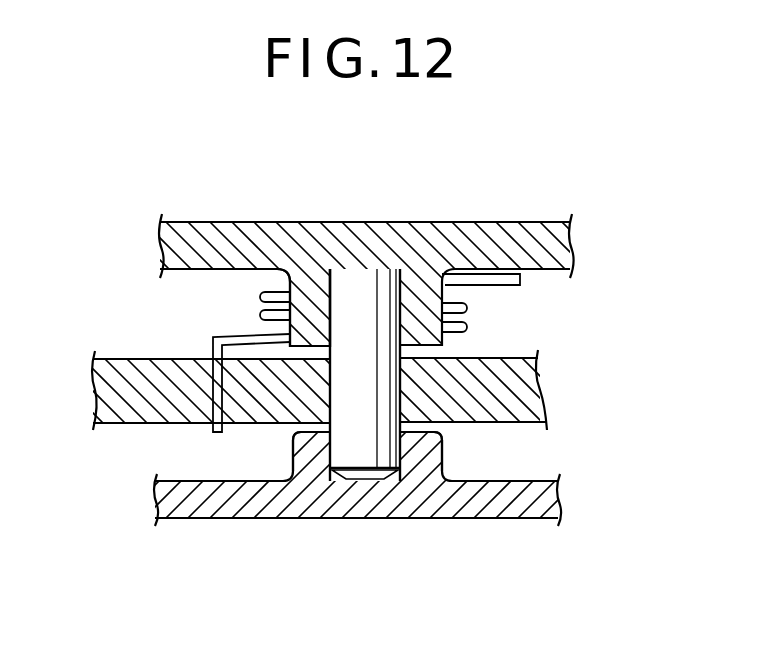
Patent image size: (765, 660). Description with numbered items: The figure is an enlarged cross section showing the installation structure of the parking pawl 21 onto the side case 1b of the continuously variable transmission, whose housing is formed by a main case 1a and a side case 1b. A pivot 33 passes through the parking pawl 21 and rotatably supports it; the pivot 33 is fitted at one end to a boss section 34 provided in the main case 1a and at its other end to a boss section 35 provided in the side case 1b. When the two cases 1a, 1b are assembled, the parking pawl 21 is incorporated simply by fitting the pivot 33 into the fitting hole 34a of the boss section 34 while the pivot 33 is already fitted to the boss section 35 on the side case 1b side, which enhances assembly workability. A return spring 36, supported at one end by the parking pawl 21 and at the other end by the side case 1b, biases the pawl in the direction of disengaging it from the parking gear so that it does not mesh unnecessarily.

The main case 1a is at (500, 495).
The side case 1b is at (486, 228).
The parking pawl 21 is at (122, 408).
The pivot 33 is at (357, 282).
The boss section 34 is at (427, 454).
The fitting hole 34a is at (320, 464).
The boss section 35 is at (447, 337).
The return spring 36 is at (283, 278).